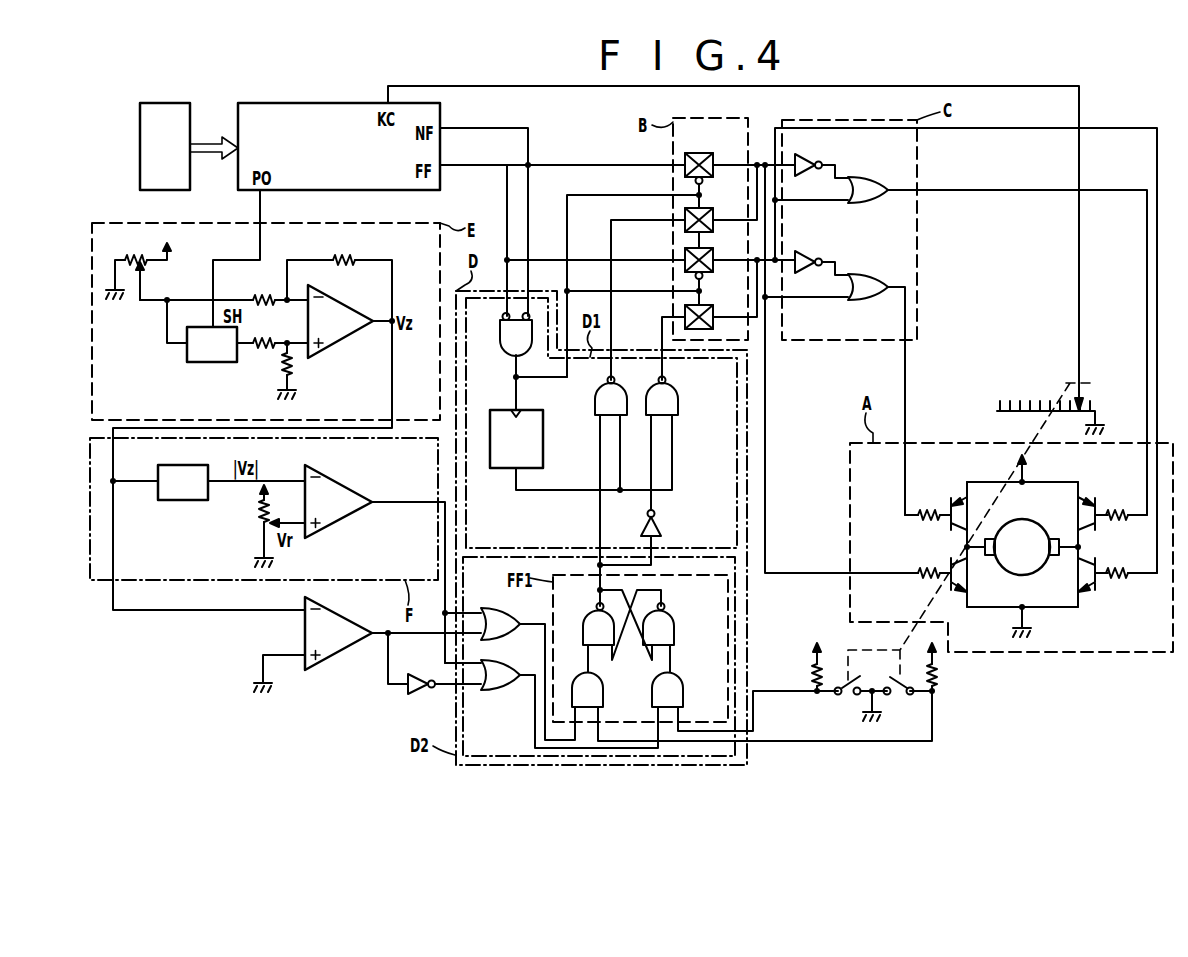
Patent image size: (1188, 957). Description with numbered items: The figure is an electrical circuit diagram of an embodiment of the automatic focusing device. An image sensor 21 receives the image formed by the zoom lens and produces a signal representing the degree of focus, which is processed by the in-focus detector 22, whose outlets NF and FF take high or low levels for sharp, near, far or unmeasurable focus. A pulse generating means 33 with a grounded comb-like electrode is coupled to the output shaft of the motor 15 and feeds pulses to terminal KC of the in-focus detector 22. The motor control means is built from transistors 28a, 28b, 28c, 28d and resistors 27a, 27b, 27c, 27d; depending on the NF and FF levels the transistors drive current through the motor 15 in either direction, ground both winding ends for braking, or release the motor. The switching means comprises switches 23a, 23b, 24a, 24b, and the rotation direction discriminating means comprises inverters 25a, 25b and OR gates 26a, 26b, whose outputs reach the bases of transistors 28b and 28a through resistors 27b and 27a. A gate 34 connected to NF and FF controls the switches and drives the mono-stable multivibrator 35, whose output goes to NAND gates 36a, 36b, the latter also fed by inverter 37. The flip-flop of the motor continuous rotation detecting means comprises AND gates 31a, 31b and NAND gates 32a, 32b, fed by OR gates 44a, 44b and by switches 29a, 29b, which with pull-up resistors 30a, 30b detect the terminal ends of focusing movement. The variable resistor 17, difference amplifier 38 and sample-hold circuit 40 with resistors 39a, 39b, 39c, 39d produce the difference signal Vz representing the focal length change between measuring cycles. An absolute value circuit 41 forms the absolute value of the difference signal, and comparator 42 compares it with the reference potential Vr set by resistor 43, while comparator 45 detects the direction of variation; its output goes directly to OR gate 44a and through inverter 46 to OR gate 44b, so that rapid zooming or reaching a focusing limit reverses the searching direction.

The image sensor 21 is at (173, 103).
The in-focus detector 22 is at (263, 103).
The variable resistor 17 is at (137, 253).
The resistor 39a is at (260, 295).
The resistor 39b is at (340, 253).
The resistor 39c is at (265, 349).
The resistor 39d is at (294, 368).
The difference amplifier 38 is at (345, 304).
The sample-hold circuit 40 is at (206, 362).
The absolute value circuit 41 is at (186, 500).
The comparator 42 is at (340, 487).
The resistor 43 is at (255, 521).
The comparator 45 is at (339, 620).
The inverter 46 is at (416, 674).
The NOR gate 34 is at (500, 338).
The mono-stable multivibrator 35 is at (500, 408).
The NAND gate 36a is at (595, 398).
The NAND gate 36b is at (678, 398).
The inverter 37 is at (661, 525).
The switch 23a is at (706, 155).
The switch 23b is at (706, 209).
The switch 24a is at (707, 249).
The switch 24b is at (707, 306).
The inverter 25a is at (797, 160).
The inverter 25b is at (800, 251).
The OR gate 26a is at (862, 178).
The OR gate 26b is at (858, 274).
The pulse generating means 33 is at (1040, 401).
The motor 15 is at (1039, 566).
The resistor 27a is at (929, 506).
The resistor 27b is at (1119, 506).
The resistor 27c is at (927, 567).
The resistor 27d is at (1122, 568).
The transistor 28a is at (964, 518).
The transistor 28b is at (1081, 518).
The transistor 28c is at (950, 585).
The transistor 28d is at (1093, 587).
The switch 29a is at (847, 699).
The switch 29b is at (888, 699).
The pull-up resistor 30a is at (810, 675).
The pull-up resistor 30b is at (942, 675).
The AND gate 31a is at (603, 688).
The AND gate 31b is at (683, 688).
The NAND gate 32a is at (583, 625).
The NAND gate 32b is at (674, 625).
The OR gate 44a is at (502, 609).
The OR gate 44b is at (492, 690).